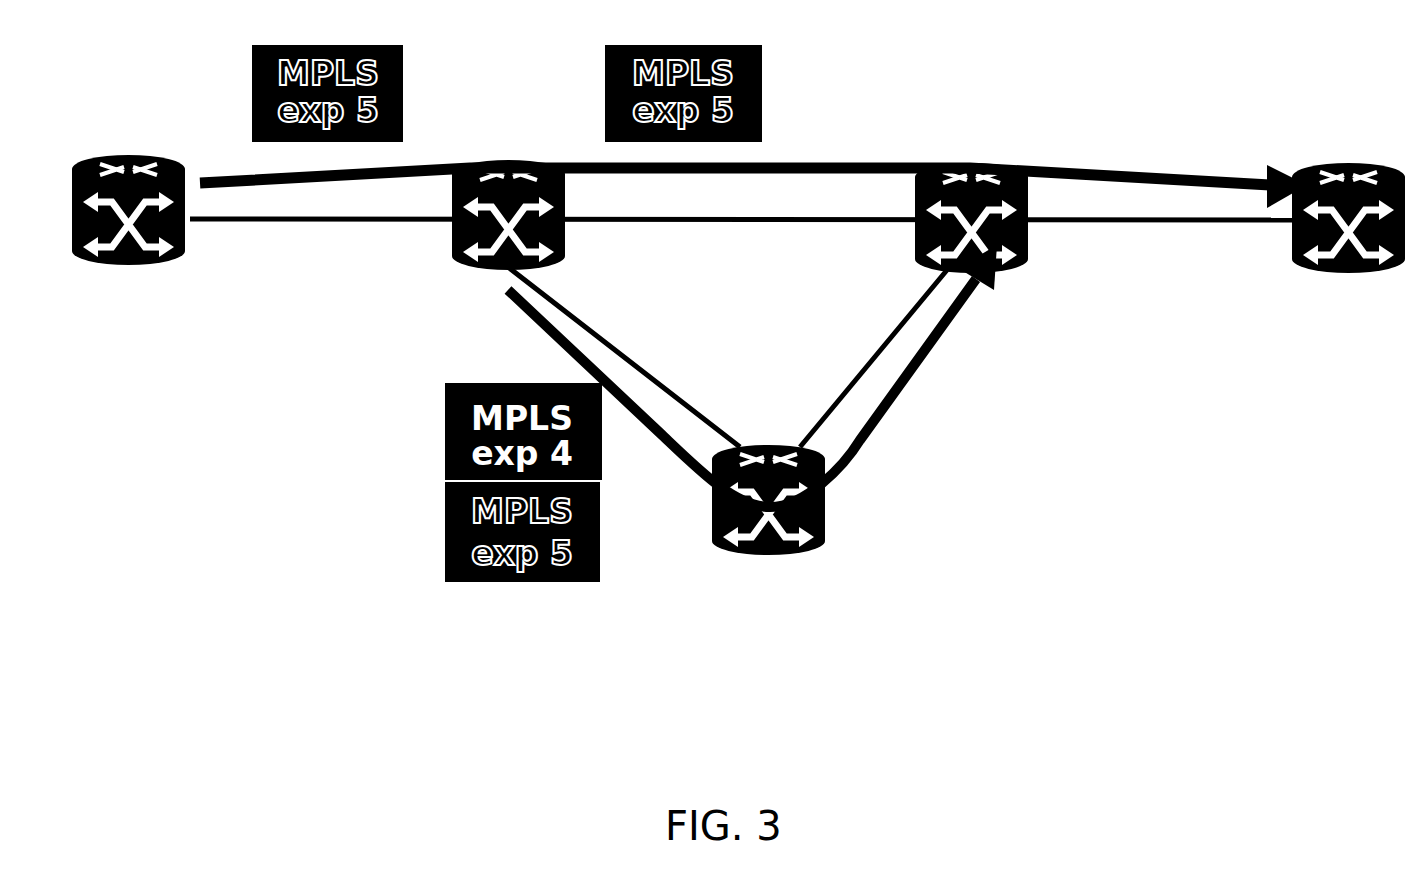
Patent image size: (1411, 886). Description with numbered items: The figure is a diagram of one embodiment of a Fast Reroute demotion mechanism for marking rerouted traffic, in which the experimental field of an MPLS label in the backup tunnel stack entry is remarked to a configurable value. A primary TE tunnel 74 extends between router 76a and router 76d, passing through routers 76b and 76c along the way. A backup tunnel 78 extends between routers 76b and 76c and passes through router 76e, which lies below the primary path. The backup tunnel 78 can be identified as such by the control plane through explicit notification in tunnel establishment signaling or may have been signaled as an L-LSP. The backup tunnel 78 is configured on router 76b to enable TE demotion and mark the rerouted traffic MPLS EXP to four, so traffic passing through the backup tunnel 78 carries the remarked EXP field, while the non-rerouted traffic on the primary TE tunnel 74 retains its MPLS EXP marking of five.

The primary TE tunnel 74 is at (1143, 175).
The router 76a is at (103, 157).
The router 76b is at (463, 253).
The router 76c is at (918, 255).
The router 76d is at (1353, 165).
The router 76e is at (778, 553).
The backup tunnel 78 is at (918, 368).